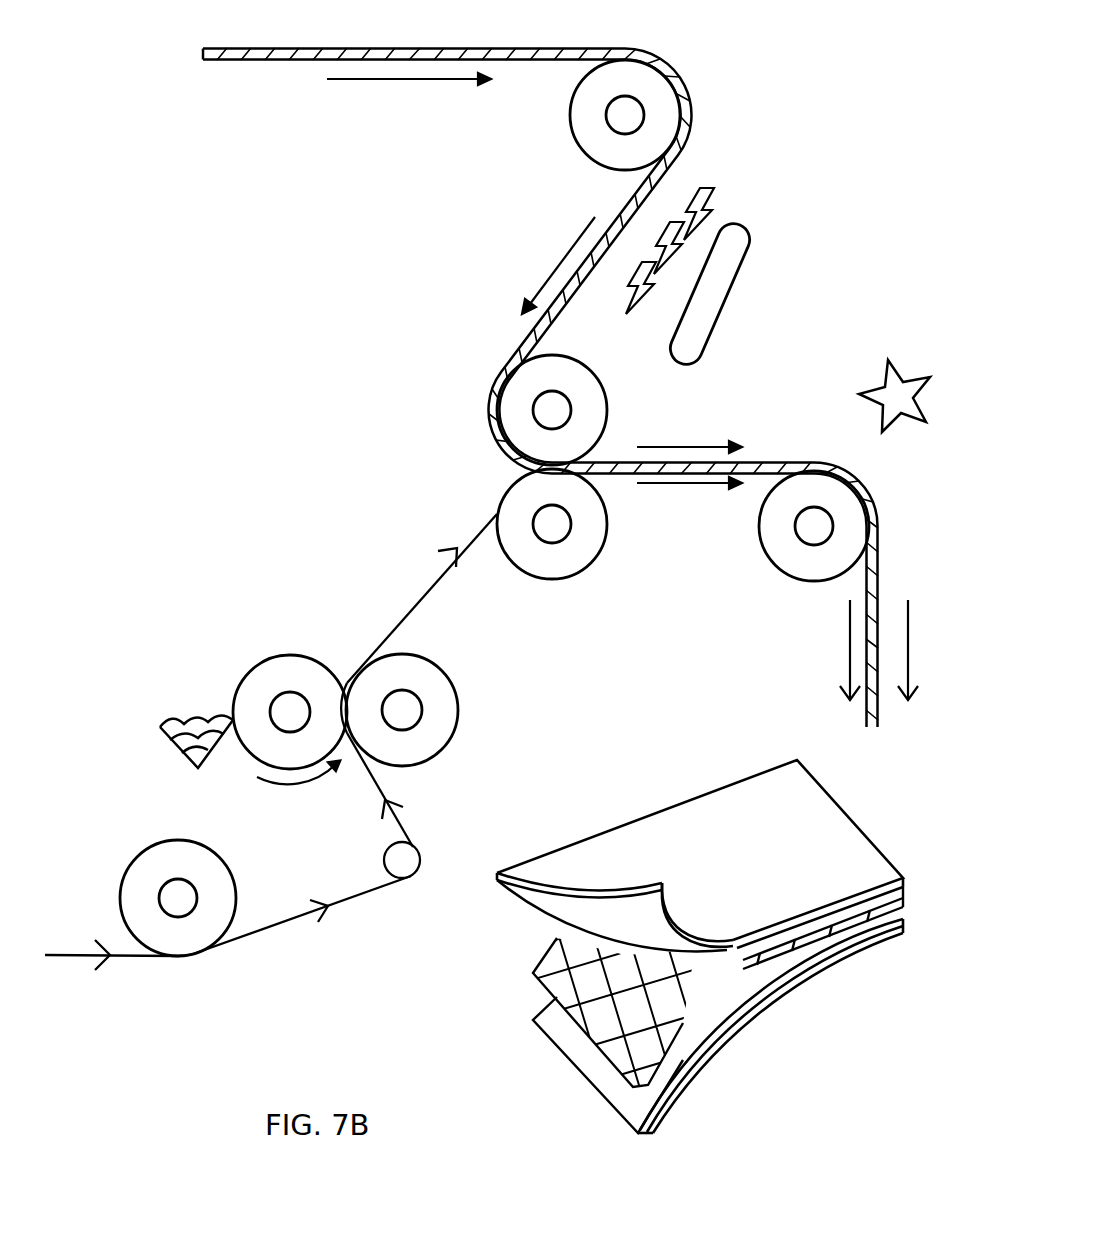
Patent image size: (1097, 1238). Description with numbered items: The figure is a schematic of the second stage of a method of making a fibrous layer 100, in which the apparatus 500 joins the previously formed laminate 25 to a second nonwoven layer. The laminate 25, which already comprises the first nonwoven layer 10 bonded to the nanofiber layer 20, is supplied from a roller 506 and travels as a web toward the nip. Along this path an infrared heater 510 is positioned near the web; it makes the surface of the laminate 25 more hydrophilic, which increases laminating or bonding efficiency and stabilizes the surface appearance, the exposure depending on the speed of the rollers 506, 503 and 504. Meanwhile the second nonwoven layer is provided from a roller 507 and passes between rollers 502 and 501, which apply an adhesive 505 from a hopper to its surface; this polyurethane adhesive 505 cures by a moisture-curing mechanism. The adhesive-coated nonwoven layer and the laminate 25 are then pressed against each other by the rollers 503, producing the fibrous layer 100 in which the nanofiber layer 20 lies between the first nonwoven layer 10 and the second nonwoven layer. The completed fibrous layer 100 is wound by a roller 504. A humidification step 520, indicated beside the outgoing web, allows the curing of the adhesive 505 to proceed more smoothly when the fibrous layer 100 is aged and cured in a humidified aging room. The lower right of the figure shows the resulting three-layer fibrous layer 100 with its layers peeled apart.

The laminating apparatus 500 is at (758, 118).
The laminate 25 is at (262, 80).
The roller 506 is at (597, 137).
The infrared (IR) heater 510 is at (753, 235).
The humidification step 520 is at (897, 373).
The rollers 503 is at (508, 418).
The roller 504 is at (787, 548).
The roller 502 is at (268, 663).
The roller 501 is at (440, 728).
The adhesive 505 is at (173, 723).
The roller 507 is at (207, 925).
The fibrous layer 100 is at (753, 1017).
The first nonwoven layer 10 is at (845, 863).
The nanofiber layer 20 is at (843, 912).